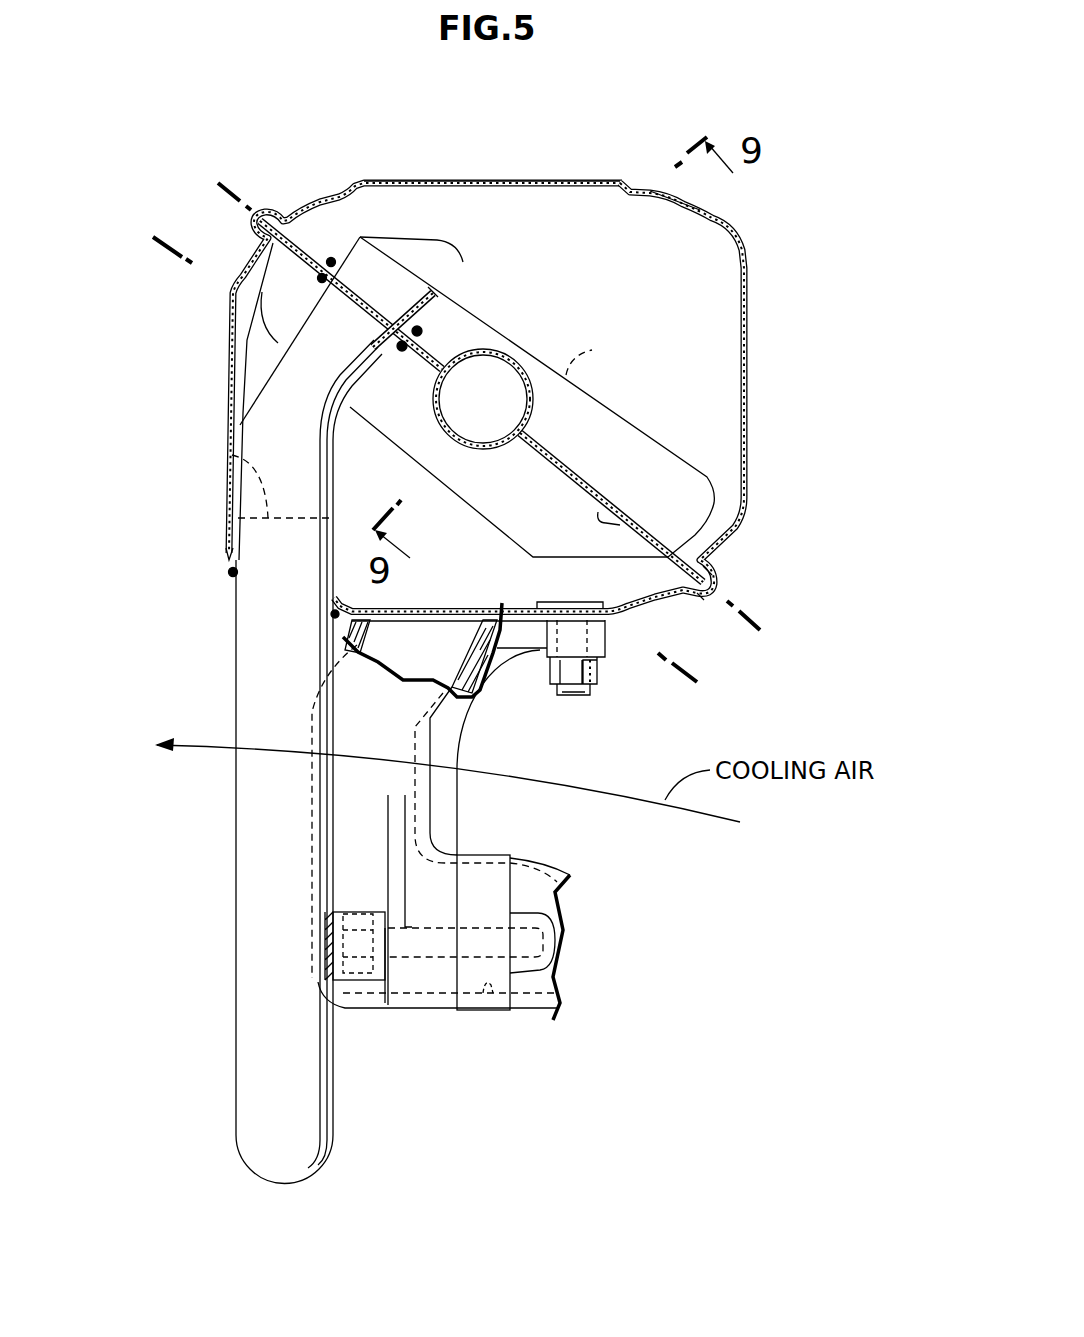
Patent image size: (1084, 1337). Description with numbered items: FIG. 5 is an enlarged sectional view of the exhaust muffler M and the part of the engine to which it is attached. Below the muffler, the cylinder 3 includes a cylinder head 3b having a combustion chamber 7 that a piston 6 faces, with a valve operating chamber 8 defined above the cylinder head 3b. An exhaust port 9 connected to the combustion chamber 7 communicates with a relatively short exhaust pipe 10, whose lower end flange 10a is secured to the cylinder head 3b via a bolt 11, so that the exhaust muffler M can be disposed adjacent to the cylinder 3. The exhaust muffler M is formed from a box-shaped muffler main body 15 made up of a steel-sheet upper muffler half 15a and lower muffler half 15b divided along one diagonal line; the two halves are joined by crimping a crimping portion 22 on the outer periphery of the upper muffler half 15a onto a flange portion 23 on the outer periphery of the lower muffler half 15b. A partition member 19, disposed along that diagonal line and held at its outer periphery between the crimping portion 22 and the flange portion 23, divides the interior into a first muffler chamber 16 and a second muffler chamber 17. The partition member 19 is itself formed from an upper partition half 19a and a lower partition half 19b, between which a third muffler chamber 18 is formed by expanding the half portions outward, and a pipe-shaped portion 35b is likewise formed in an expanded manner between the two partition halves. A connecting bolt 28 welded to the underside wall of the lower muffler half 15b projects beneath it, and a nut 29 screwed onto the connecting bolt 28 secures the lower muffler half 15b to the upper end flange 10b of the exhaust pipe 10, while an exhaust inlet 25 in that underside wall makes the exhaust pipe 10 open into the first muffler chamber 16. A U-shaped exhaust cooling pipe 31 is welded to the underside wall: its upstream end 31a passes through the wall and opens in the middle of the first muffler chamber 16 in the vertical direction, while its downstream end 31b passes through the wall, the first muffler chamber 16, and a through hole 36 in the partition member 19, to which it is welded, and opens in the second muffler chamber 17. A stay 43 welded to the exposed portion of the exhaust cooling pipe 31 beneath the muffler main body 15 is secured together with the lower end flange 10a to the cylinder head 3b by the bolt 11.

The muffler main body 15 is at (536, 176).
The upper muffler half 15a is at (436, 178).
The lower muffler half 15b is at (225, 404).
The exhaust muffler M is at (555, 163).
The partition member 19 is at (566, 401).
The upper partition half 19a is at (577, 478).
The lower partition half 19b is at (610, 505).
The pipe-shaped portion 35b is at (497, 348).
The through hole 36 is at (378, 335).
The second muffler chamber 17 is at (632, 291).
The first muffler chamber 16 is at (458, 541).
The third muffler chamber 18 is at (592, 350).
The exhaust cooling pipe 31 is at (292, 664).
The upstream end 31a is at (232, 456).
The downstream end 31b is at (420, 290).
The exhaust inlet 25 is at (467, 610).
The upper end flange 10b is at (597, 640).
The nut 29 is at (555, 672).
The connecting bolt 28 is at (573, 692).
The crimping portion 22 is at (715, 580).
The flange portion 23 is at (700, 597).
The exhaust pipe 10 is at (374, 804).
The stay 43 is at (362, 912).
The lower end flange 10a is at (430, 1008).
The bolt 11 is at (363, 995).
The exhaust port 9 is at (491, 1010).
The cylinder head 3b is at (483, 856).
The cylinder 3 is at (547, 857).
The piston 6 is at (205, 628).
The valve operating chamber 8 is at (254, 152).
The combustion chamber 7 is at (158, 245).